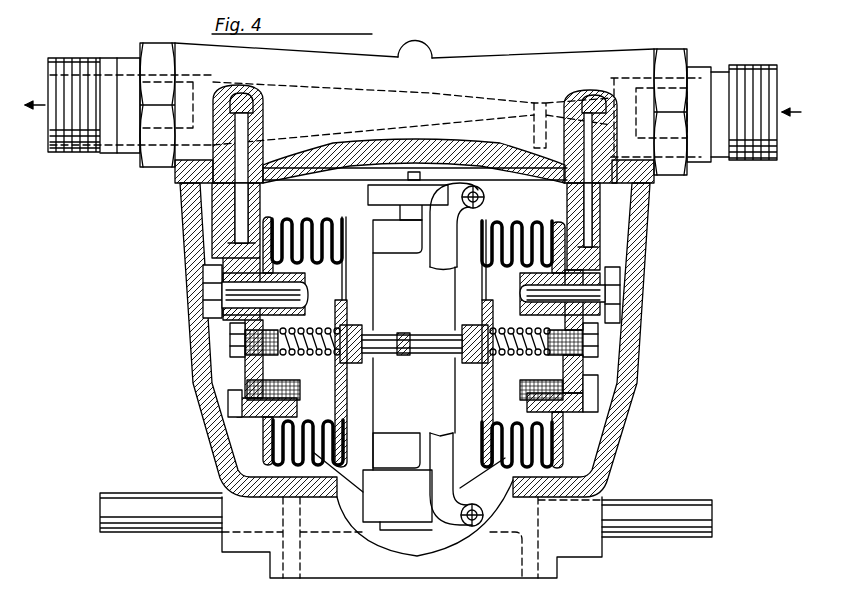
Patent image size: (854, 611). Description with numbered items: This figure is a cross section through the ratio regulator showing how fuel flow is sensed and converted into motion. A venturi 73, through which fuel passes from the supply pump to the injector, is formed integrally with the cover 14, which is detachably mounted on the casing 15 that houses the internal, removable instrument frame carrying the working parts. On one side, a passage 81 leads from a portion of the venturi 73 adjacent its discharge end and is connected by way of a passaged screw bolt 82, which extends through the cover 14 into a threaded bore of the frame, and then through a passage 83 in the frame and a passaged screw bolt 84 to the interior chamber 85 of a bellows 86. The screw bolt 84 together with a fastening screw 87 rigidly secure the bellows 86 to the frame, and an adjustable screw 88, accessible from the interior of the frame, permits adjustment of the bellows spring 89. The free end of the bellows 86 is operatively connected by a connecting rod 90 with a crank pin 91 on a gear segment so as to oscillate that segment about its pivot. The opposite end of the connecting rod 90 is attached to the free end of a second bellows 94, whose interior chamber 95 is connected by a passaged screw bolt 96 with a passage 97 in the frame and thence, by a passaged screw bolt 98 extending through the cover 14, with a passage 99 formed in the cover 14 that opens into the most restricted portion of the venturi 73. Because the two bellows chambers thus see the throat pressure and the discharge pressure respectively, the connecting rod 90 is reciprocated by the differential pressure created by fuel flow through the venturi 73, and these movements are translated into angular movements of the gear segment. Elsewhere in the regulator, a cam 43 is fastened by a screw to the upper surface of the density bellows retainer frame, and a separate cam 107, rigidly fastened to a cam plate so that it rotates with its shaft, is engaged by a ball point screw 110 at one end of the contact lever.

The cover 14 is at (173, 168).
The casing 15 is at (193, 373).
The cam 43 is at (372, 503).
The venturi 73 is at (350, 90).
The passage 81 is at (243, 100).
The passaged screw bolt 82 is at (260, 117).
The passage 83 is at (226, 245).
The passaged screw bolt 84 is at (233, 288).
The interior chamber 85 is at (305, 297).
The bellows 86 is at (293, 250).
The fastening screw 87 is at (240, 403).
The adjustable screw 88 is at (240, 339).
The bellows spring 89 is at (317, 363).
The connecting rod 90 is at (437, 337).
The crank pin 91 is at (402, 333).
The bellows 94 is at (480, 277).
The interior chamber 95 is at (484, 286).
The passaged screw bolt 96 is at (598, 307).
The passage 97 is at (613, 252).
The passaged screw bolt 98 is at (607, 220).
The passage 99 is at (553, 133).
The cam 107 is at (368, 193).
The ball point screw 110 is at (463, 173).